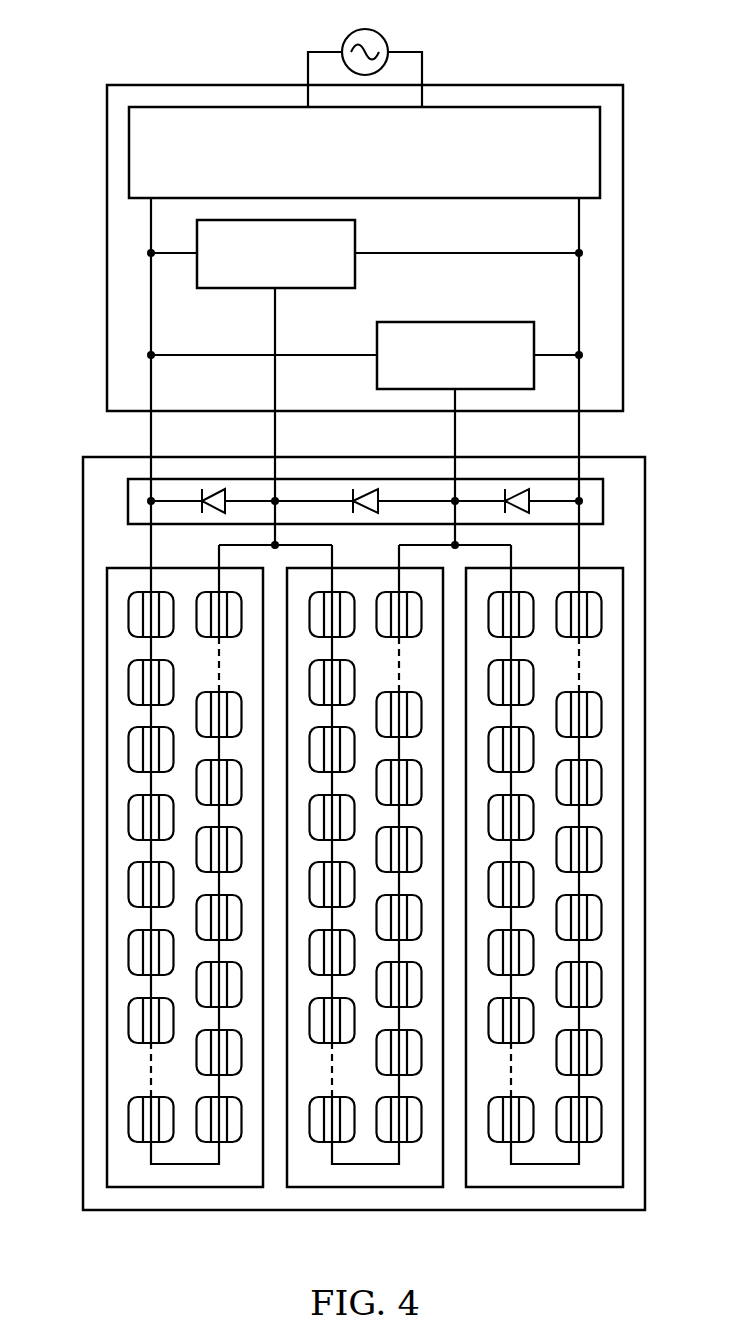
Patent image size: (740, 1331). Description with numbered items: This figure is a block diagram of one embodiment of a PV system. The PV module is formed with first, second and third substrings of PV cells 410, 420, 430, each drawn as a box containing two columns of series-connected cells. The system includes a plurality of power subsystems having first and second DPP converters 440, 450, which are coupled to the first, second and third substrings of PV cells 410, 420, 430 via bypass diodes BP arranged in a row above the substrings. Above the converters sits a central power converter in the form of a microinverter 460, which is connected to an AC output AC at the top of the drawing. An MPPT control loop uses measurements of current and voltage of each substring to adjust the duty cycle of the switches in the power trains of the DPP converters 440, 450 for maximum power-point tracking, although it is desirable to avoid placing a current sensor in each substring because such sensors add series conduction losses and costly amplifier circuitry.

The first substring of PV cells 410 is at (105, 1215).
The second substring of PV cells 420 is at (285, 1215).
The third substring of PV cells 430 is at (467, 1215).
The first DPP converter 440 is at (253, 289).
The second DPP converter 450 is at (466, 321).
The microinverter 460 is at (343, 185).
The bypass diodes BP is at (126, 500).
The AC output AC is at (365, 54).